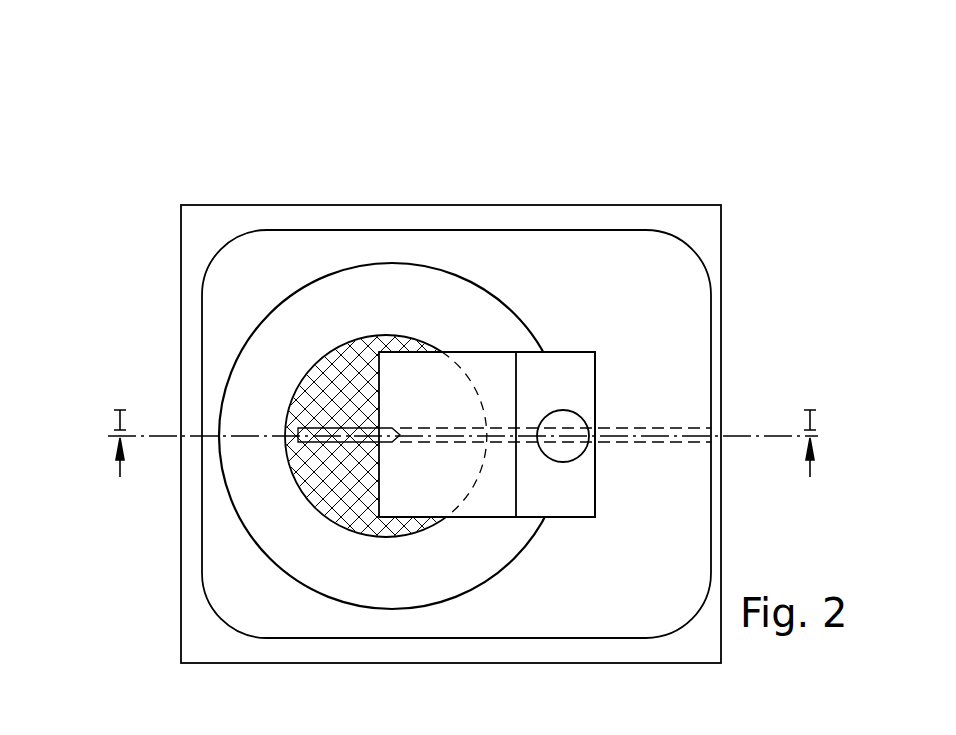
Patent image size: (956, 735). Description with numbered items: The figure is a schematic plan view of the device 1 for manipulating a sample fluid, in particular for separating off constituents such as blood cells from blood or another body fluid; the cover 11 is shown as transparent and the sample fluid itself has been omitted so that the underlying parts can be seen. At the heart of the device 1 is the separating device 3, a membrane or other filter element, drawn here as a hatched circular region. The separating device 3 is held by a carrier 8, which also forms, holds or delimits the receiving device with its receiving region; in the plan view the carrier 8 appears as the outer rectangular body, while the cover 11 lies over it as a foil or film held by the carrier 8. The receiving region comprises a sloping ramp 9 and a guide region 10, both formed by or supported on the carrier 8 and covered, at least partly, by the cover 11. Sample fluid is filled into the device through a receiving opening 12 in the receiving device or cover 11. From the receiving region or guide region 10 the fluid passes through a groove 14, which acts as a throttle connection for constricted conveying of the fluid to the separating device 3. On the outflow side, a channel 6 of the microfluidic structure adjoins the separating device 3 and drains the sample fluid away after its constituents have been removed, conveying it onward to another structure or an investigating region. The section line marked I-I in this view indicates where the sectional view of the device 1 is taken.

The device 1 is at (148, 180).
The separating device 3 is at (343, 362).
The channel 6 is at (657, 437).
The carrier 8 is at (713, 238).
The sloping ramp 9 is at (567, 375).
The guide region 10 is at (437, 395).
The cover 11 is at (640, 267).
The receiving opening 12 is at (580, 408).
The groove 14 is at (377, 450).